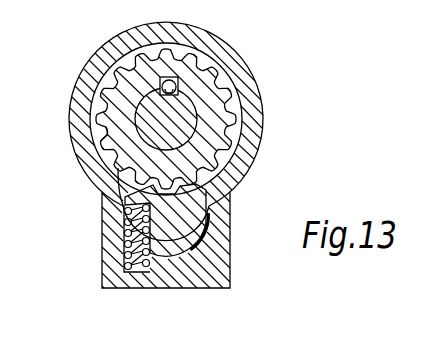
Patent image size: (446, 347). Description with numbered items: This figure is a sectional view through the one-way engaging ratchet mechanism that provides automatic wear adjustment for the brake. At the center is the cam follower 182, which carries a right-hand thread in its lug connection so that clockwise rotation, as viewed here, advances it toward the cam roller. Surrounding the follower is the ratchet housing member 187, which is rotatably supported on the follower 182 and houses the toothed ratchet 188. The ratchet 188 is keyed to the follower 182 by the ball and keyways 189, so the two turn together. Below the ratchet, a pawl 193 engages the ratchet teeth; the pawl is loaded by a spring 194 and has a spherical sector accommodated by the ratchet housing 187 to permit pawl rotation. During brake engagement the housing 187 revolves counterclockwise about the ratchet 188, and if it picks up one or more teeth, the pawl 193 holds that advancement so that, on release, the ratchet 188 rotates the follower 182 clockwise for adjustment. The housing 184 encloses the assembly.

The cam follower 182 is at (142, 108).
The housing 184 is at (268, 127).
The ratchet housing member 187 is at (243, 76).
The ratchet 188 is at (101, 127).
The ball and keyways 189 is at (172, 86).
The pawl 193 is at (207, 212).
The spring 194 is at (124, 216).